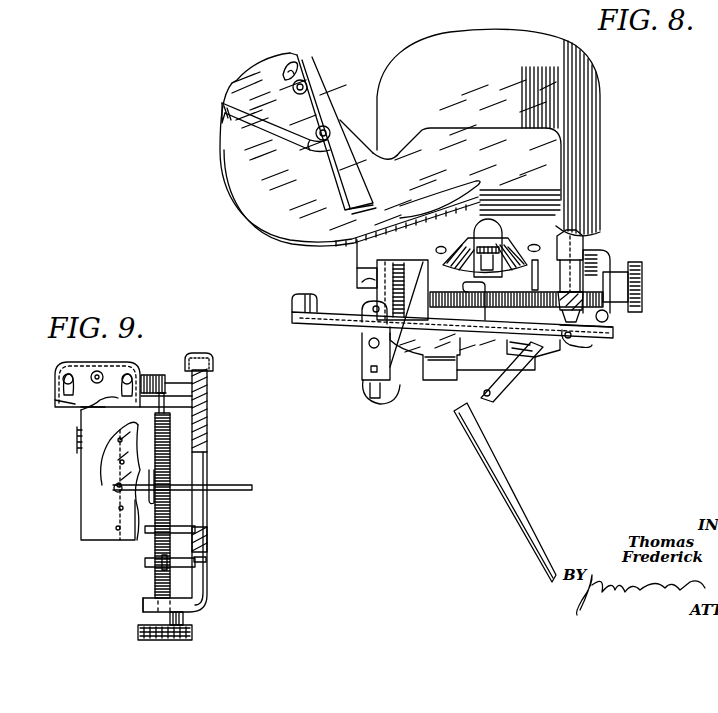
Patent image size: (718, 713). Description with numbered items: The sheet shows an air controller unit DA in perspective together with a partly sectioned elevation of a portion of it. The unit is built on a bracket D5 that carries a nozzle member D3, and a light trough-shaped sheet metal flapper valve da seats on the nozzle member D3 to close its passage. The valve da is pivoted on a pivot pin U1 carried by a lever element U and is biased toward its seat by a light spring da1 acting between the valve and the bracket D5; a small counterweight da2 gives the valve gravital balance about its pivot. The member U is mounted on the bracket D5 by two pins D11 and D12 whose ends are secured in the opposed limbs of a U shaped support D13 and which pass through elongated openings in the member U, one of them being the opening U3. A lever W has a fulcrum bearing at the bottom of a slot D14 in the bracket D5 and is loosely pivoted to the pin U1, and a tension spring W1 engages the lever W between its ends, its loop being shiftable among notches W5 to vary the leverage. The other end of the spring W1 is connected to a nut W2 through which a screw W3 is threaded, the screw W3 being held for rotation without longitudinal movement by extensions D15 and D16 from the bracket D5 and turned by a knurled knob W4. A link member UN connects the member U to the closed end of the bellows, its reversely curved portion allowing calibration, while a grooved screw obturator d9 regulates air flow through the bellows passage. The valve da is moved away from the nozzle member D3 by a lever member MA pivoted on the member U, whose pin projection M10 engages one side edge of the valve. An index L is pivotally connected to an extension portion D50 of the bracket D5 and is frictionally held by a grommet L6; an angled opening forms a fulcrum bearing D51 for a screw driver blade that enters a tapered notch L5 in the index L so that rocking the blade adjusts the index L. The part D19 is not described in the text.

In FIG. 8, the air controller unit DA is at (596, 50).
In FIG. 8, the bracket D5 is at (548, 163).
In FIG. 9, the bracket D5 is at (200, 462).
In FIG. 8, the tapered notch L5 is at (310, 70).
In FIG. 8, the grommet L6 is at (306, 83).
In FIG. 8, the fulcrum bearing D51 is at (284, 70).
In FIG. 8, the extension portion of the bracket D50 is at (315, 112).
In FIG. 8, the slot D14 is at (360, 272).
In FIG. 8, the lever W is at (365, 283).
In FIG. 9, the lever W is at (81, 420).
In FIG. 8, the tension spring W1 is at (480, 300).
In FIG. 9, the tension spring W1 is at (150, 505).
In FIG. 8, the screw W3 is at (596, 284).
In FIG. 9, the screw W3 is at (170, 585).
In FIG. 8, the knurled knob W4 is at (642, 285).
In FIG. 9, the knurled knob W4 is at (192, 634).
In FIG. 8, the extension from the bracket D16 is at (608, 316).
In FIG. 9, the extension from the bracket D16 is at (143, 604).
In FIG. 8, the nozzle member D3 is at (573, 250).
In FIG. 8, the grooved screw obturator d9 is at (488, 228).
In FIG. 8, the link member UN is at (532, 288).
In FIG. 9, the link member UN is at (228, 480).
In FIG. 8, the pin projection M10 is at (612, 334).
In FIG. 8, the counterweight da2 is at (292, 302).
In FIG. 8, the light spring da1 is at (370, 301).
In FIG. 8, the flapper valve da is at (575, 345).
In FIG. 8, the pin D12 is at (366, 390).
In FIG. 9, the pin D12 is at (62, 390).
In FIG. 8, the opening U3 is at (407, 385).
In FIG. 8, the lever element U is at (440, 380).
In FIG. 9, the lever element U is at (85, 495).
In FIG. 8, the lever member MA is at (510, 390).
In FIG. 8, the index L is at (505, 485).
In FIG. 9, the pivot pin U1 is at (105, 362).
In FIG. 9, the pin D11 is at (103, 374).
In FIG. 9, the notches W5 is at (165, 397).
In FIG. 9, the U shaped support D13 is at (207, 392).
In FIG. 9, the cap D19 is at (213, 366).
In FIG. 9, the extension from the bracket D15 is at (195, 527).
In FIG. 9, the nut W2 is at (195, 562).